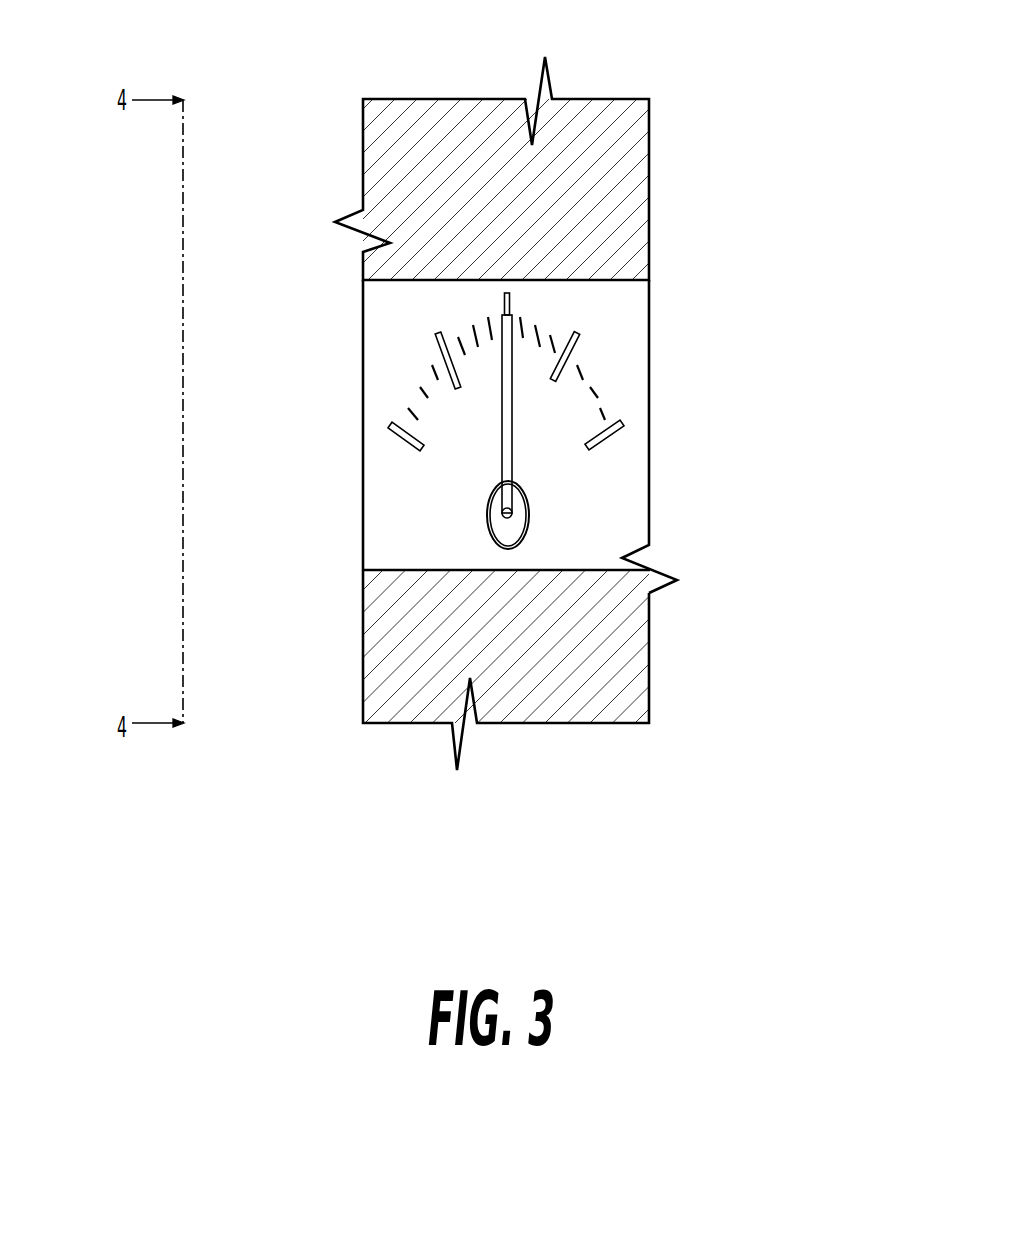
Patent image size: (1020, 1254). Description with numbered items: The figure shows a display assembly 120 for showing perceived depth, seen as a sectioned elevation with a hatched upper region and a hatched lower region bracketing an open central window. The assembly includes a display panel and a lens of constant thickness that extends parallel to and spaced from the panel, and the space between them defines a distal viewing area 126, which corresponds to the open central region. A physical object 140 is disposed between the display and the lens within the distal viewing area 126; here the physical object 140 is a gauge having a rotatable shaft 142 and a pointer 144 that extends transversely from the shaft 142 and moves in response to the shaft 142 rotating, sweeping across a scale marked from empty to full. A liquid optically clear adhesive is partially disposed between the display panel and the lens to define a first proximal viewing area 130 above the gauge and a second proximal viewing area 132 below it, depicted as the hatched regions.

The display assembly 120 is at (664, 77).
The distal viewing area 126 is at (372, 400).
The first proximal viewing area 130 is at (602, 128).
The second proximal viewing area 132 is at (412, 703).
The physical object 140 is at (558, 512).
The rotatable shaft 142 is at (505, 512).
The pointer 144 is at (512, 412).